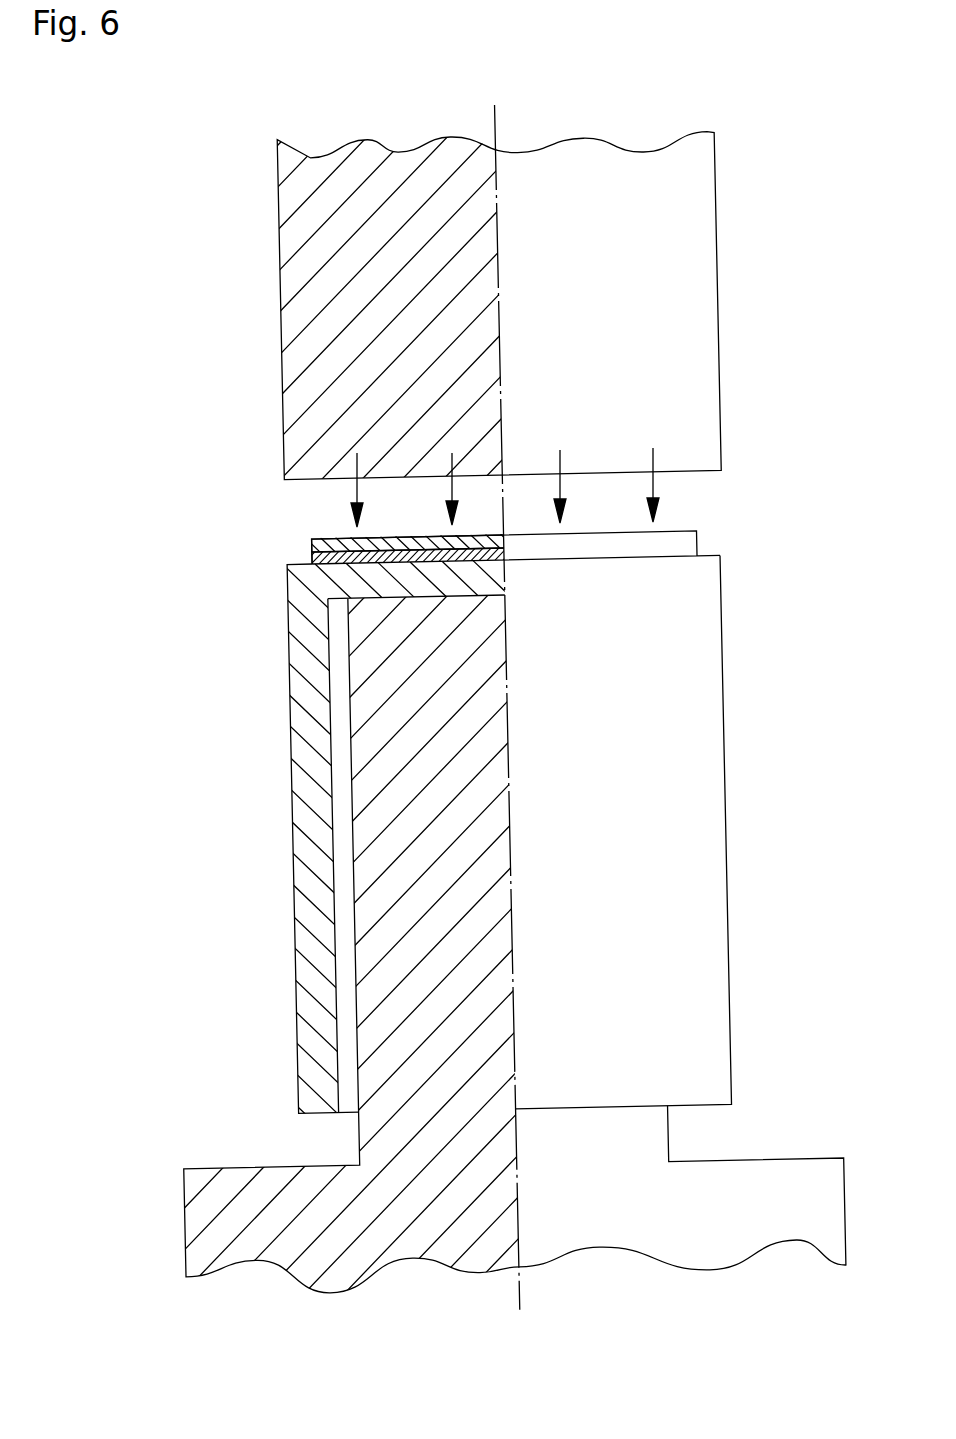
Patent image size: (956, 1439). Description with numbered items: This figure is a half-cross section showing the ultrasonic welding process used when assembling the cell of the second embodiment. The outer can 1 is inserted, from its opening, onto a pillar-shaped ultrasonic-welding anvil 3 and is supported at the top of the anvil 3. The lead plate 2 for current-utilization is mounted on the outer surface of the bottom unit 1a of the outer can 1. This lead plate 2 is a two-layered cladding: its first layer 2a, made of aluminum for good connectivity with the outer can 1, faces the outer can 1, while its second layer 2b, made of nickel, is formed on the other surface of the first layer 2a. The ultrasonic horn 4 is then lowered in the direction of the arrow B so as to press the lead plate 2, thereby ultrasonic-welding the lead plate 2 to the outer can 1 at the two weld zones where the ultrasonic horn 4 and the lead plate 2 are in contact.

The outer can 1 is at (303, 769).
The bottom unit of the outer can 1a is at (710, 557).
The lead plate for current-utilization 2 is at (694, 531).
The first layer 2a is at (312, 557).
The second layer 2b is at (312, 549).
The ultrasonic-welding anvil 3 is at (375, 875).
The ultrasonic horn 4 is at (688, 327).
The arrow B is at (353, 490).